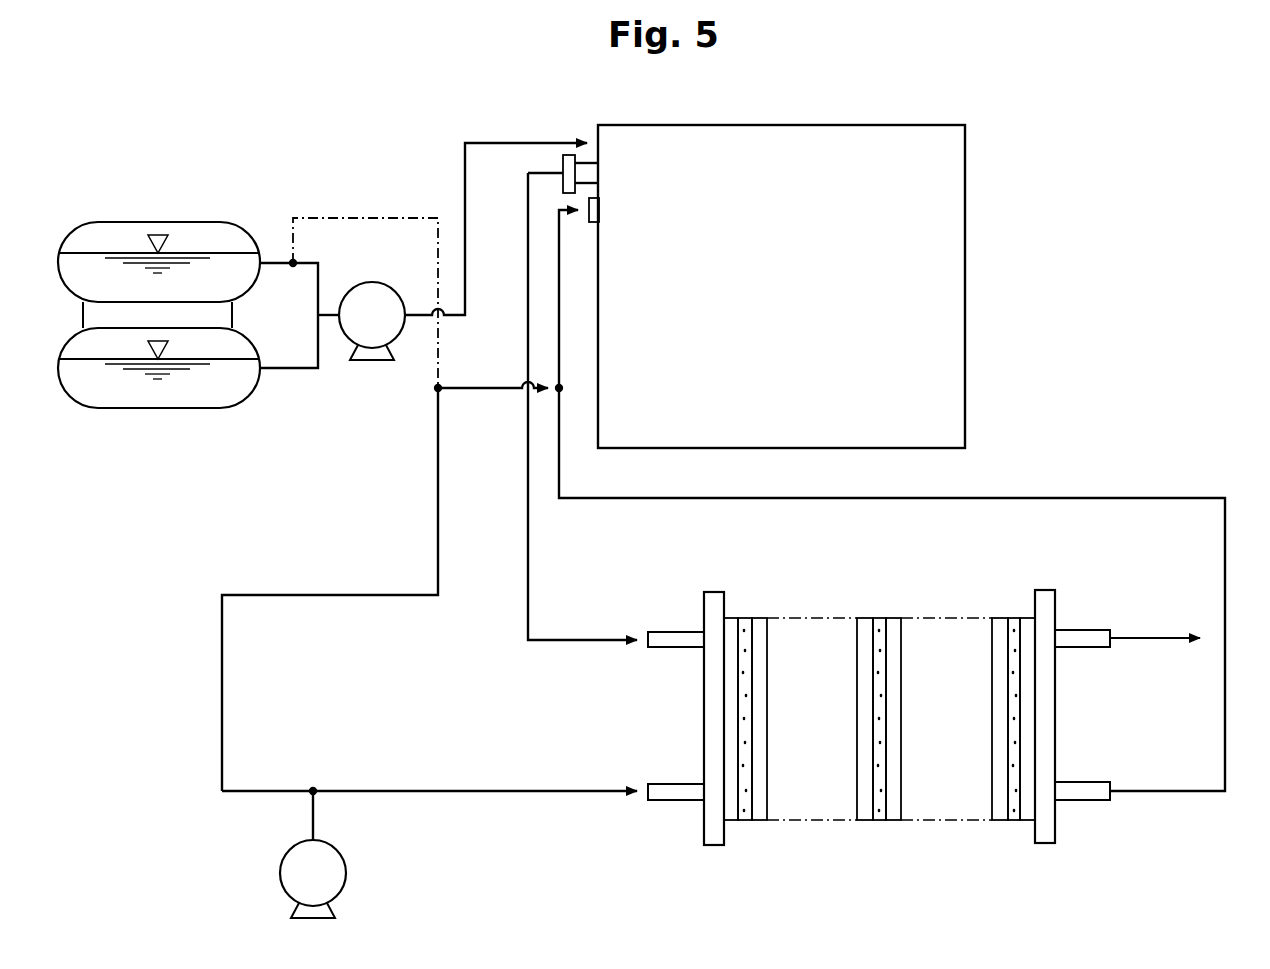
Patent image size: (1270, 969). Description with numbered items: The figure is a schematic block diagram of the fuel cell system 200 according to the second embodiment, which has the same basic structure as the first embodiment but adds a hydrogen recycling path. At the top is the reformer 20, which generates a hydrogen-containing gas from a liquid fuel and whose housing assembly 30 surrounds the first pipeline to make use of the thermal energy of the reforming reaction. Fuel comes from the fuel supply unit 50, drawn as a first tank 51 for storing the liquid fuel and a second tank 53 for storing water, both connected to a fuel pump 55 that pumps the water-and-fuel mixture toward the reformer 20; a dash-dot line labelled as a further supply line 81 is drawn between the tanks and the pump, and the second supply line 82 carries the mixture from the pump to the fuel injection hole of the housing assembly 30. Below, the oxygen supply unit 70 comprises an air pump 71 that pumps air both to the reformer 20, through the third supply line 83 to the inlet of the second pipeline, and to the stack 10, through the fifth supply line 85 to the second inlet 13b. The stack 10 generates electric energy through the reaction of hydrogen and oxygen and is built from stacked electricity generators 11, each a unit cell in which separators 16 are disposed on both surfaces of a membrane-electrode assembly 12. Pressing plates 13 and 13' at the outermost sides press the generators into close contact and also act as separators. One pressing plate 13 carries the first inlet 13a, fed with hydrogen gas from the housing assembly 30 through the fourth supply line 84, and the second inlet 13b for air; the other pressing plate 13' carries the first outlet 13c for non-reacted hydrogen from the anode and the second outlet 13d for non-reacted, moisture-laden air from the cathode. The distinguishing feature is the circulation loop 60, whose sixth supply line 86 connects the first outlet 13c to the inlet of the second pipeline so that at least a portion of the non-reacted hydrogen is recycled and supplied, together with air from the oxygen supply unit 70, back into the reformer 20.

The fuel cell system 200 is at (688, 103).
The reformer 20 is at (977, 170).
The housing assembly 30 is at (975, 358).
The fuel supply unit 50 is at (232, 318).
The first tank 51 is at (112, 222).
The second tank 53 is at (110, 408).
The fuel pump 55 is at (381, 283).
The fuel supply line 81 is at (298, 216).
The second supply line 82 is at (465, 268).
The third supply line 83 is at (438, 468).
The fourth supply line 84 is at (528, 530).
The fifth supply line 85 is at (414, 791).
The sixth supply line 86 is at (1066, 498).
The circulation loop 60 is at (910, 589).
The oxygen supply unit 70 is at (279, 853).
The air pump 71 is at (330, 845).
The stack 10 is at (921, 687).
The electricity generator 11 is at (932, 562).
The membrane-electrode assembly 12 is at (880, 618).
The separators 16 is at (866, 618).
The pressing plate 13 is at (691, 722).
The pressing plate 13' is at (1074, 720).
The first inlet 13a is at (675, 632).
The second inlet 13b is at (675, 784).
The first outlet 13c is at (1085, 782).
The second outlet 13d is at (1085, 630).